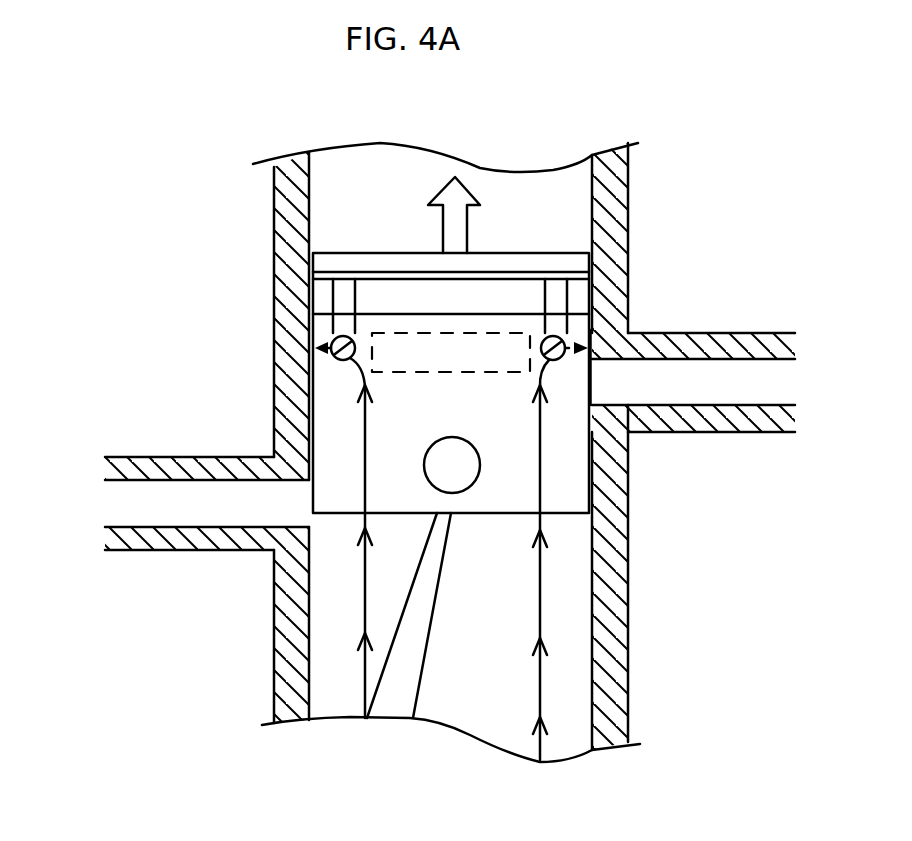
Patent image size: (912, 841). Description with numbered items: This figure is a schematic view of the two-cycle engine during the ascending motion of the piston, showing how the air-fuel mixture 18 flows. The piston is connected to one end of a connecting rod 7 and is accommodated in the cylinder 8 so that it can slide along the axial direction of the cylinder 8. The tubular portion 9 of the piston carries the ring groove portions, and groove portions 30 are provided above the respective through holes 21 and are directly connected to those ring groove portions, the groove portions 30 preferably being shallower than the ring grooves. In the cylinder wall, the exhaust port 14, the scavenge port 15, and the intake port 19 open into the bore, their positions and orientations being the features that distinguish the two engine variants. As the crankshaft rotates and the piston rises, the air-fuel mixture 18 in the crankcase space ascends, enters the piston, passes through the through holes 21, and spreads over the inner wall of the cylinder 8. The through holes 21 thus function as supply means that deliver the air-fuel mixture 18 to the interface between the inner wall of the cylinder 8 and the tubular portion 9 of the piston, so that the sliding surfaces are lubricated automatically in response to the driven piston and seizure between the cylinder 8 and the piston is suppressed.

The connecting rod 7 is at (393, 697).
The cylinder 8 is at (290, 248).
The tubular portion 9 is at (630, 530).
The exhaust port 14 is at (728, 380).
The scavenge port 15 is at (433, 355).
The air-fuel mixture 18 is at (358, 608).
The intake port 19 is at (175, 505).
The through holes 21 is at (567, 355).
The groove portions 30 is at (553, 297).